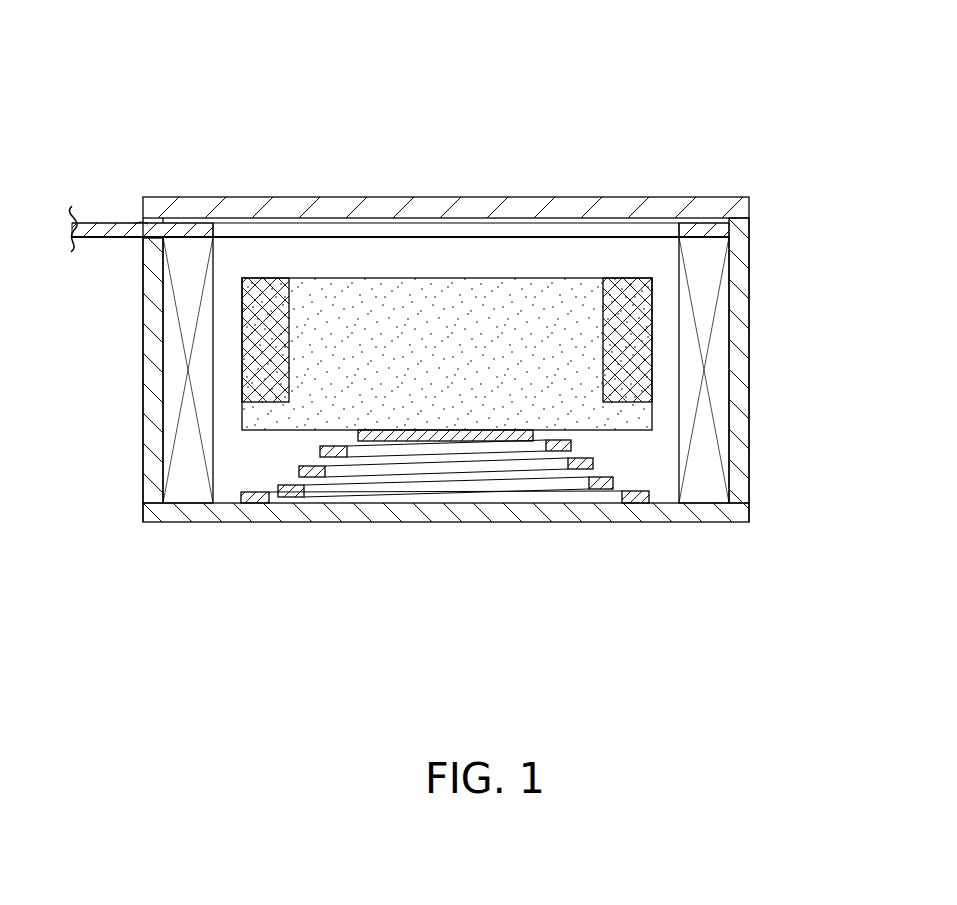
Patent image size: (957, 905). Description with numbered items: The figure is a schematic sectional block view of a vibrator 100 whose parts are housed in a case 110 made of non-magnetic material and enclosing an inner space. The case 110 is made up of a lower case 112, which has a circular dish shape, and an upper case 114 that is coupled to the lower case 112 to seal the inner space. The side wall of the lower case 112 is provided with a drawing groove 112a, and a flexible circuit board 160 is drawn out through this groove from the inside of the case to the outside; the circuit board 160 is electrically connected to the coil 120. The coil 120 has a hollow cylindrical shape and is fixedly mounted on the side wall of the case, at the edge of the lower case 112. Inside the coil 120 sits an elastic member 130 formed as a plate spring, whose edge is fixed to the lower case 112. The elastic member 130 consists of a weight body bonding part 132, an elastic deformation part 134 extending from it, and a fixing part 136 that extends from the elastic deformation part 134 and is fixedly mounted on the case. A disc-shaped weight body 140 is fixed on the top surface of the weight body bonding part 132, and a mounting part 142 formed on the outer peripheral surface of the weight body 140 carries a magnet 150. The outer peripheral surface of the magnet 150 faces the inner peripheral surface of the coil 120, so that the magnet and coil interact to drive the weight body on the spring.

The vibrator 100 is at (758, 30).
The case 110 is at (486, 359).
The lower case 112 is at (444, 370).
The drawing groove 112a is at (142, 232).
The upper case 114 is at (747, 205).
The coil 120 is at (185, 453).
The elastic member 130 is at (445, 581).
The weight body bonding part 132 is at (420, 437).
The elastic deformation part 134 is at (312, 470).
The fixing part 136 is at (478, 678).
The weight body 140 is at (447, 259).
The mounting part 142 is at (615, 328).
The magnet 150 is at (264, 302).
The circuit board 160 is at (102, 230).